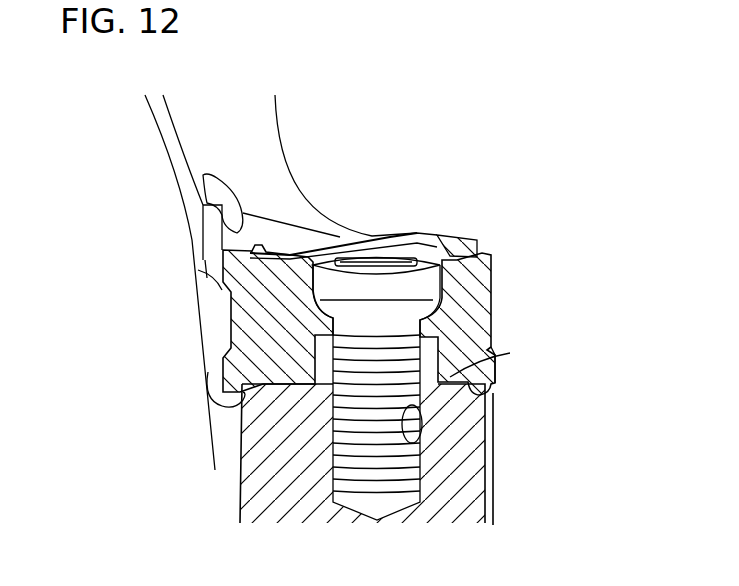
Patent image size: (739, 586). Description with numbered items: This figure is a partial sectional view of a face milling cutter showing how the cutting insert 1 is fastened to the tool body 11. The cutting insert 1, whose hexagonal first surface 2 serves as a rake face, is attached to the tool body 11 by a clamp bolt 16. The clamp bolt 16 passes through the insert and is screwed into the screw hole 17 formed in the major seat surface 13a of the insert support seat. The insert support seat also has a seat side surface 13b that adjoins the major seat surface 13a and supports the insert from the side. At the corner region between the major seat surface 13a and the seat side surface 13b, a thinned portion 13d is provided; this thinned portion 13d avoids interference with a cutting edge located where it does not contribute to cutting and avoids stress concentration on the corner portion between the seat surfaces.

The cutting insert 1 is at (520, 313).
The first surface 2 is at (250, 252).
The tool body 11 is at (453, 488).
The major seat surface 13a is at (510, 353).
The seat side surface 13b is at (225, 330).
The thinned portion 13d is at (210, 278).
The clamp bolt 16 is at (407, 287).
The screw hole 17 is at (420, 443).